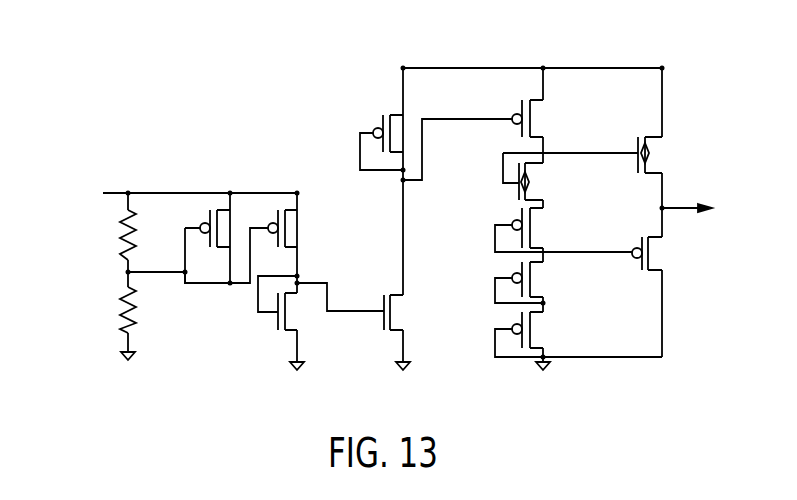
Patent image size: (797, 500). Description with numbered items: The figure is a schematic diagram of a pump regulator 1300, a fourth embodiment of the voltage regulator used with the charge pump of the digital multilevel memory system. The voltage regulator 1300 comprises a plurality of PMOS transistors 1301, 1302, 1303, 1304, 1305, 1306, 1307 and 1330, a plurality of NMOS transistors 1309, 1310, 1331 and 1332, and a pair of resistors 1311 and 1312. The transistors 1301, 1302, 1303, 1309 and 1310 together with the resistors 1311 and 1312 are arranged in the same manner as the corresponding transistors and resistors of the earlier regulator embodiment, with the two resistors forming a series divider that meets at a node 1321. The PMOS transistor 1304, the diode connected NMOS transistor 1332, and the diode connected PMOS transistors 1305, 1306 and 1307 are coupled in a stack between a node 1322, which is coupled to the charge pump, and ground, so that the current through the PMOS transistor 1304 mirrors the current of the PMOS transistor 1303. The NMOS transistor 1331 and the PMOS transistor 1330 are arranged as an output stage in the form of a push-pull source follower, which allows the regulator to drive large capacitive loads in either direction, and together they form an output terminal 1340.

The pump regulator 1300 is at (252, 84).
The PMOS transistor 1301 is at (226, 226).
The PMOS transistor 1302 is at (290, 231).
The PMOS transistor 1303 is at (383, 117).
The PMOS transistor 1304 is at (538, 120).
The diode connected PMOS transistor 1305 is at (535, 225).
The diode connected PMOS transistor 1306 is at (535, 278).
The diode connected PMOS transistor 1307 is at (535, 330).
The NMOS transistor 1309 is at (290, 312).
The NMOS transistor 1310 is at (398, 312).
The resistor 1311 is at (120, 216).
The resistor 1312 is at (120, 302).
The voltage divider node 1321 is at (185, 284).
The node 1322 is at (455, 68).
The PMOS transistor 1330 is at (660, 257).
The NMOS transistor 1331 is at (652, 157).
The diode connected NMOS transistor 1332 is at (518, 186).
The output terminal 1340 is at (686, 207).